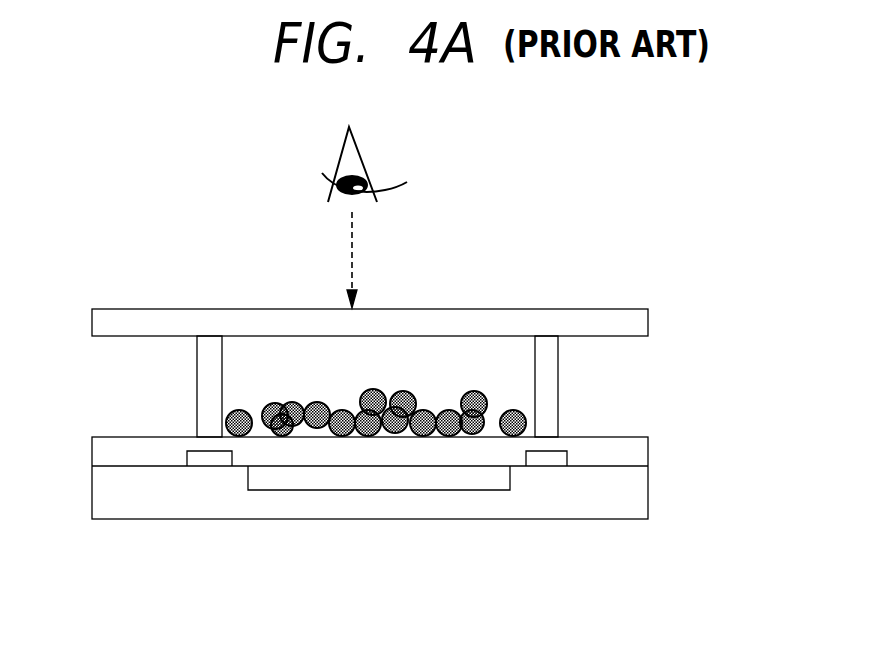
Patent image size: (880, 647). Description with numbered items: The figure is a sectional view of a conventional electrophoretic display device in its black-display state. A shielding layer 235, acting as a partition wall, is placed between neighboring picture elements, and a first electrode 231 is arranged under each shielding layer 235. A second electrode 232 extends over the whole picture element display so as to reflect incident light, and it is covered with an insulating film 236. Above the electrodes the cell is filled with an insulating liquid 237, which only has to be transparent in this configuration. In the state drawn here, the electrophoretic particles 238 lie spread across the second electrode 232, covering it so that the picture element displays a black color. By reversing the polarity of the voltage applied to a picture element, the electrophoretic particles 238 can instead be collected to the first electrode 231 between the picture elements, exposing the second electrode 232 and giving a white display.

The first electrode 231 is at (208, 460).
The second electrode 232 is at (380, 477).
The shielding layer (partition wall) 235 is at (208, 385).
The insulating film 236 is at (632, 452).
The insulating liquid 237 is at (443, 372).
The electrophoretic particles 238 is at (320, 403).